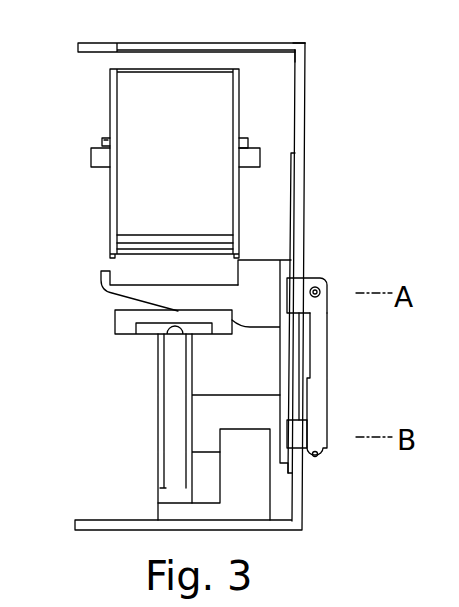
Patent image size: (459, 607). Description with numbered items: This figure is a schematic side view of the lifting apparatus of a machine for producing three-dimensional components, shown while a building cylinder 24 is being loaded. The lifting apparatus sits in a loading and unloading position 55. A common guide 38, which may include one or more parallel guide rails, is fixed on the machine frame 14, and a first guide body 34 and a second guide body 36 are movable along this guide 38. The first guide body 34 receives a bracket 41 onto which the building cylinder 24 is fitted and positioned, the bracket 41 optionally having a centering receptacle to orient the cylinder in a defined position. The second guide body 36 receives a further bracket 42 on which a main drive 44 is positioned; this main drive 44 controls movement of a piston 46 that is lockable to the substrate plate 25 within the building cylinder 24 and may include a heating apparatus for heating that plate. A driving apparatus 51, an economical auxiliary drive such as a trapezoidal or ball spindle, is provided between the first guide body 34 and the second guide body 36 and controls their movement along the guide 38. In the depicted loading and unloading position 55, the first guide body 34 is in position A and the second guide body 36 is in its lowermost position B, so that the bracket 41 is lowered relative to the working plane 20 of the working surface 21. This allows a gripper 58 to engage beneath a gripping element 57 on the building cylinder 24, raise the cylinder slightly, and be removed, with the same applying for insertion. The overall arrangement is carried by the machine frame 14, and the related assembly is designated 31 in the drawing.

The machine frame 14 is at (305, 75).
The working plane 20 is at (107, 42).
The working surface 21 is at (265, 36).
The building cylinder 24 is at (110, 103).
The substrate plate 25 is at (128, 238).
The actuator assembly 31 is at (366, 346).
The first guide body 34 is at (318, 260).
The second guide body 36 is at (322, 465).
The guide 38 is at (293, 168).
The bracket 41 is at (254, 275).
The further bracket 42 is at (225, 412).
The main drive 44 is at (157, 430).
The piston 46 is at (127, 320).
The driving apparatus 51 is at (330, 397).
The loading and unloading position 55 is at (100, 291).
The gripping element 57 is at (102, 140).
The gripper 58 is at (91, 160).